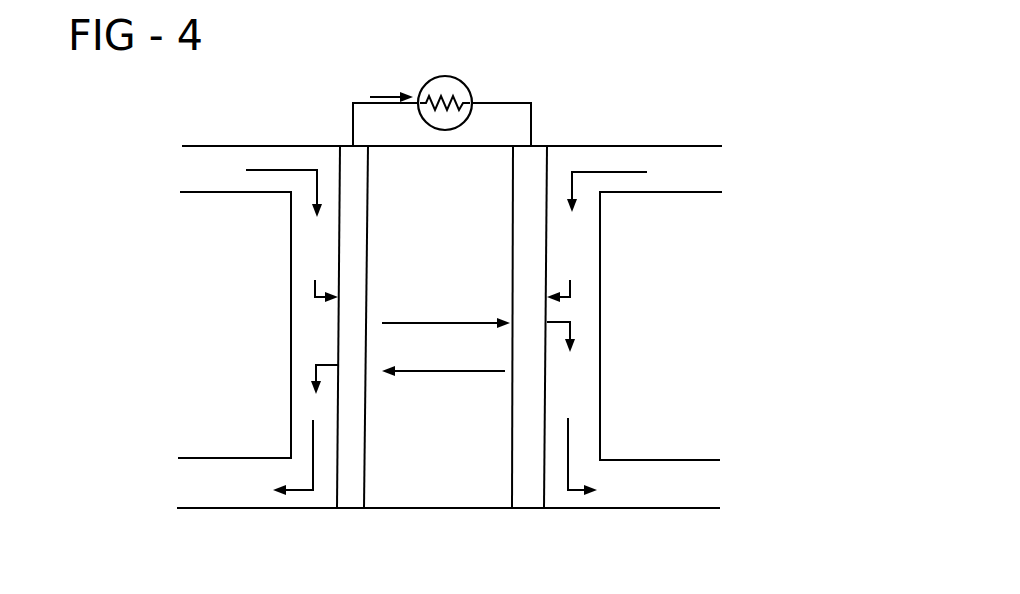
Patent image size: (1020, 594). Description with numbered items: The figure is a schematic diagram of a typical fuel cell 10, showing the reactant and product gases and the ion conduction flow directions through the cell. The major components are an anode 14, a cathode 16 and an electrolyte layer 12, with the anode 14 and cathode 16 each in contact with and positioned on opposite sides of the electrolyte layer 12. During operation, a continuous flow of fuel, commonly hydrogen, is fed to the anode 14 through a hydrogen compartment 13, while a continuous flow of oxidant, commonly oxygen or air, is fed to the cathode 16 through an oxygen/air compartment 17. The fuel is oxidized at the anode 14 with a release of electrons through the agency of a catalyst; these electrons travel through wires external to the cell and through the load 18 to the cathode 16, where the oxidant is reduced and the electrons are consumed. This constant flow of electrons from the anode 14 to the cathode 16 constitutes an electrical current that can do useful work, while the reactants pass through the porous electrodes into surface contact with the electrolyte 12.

The fuel cell 10 is at (770, 114).
The electrolyte layer 12 is at (435, 520).
The hydrogen compartment 13 is at (272, 339).
The anode 14 is at (329, 347).
The cathode 16 is at (546, 349).
The oxygen/air compartment 17 is at (614, 295).
The load 18 is at (446, 66).